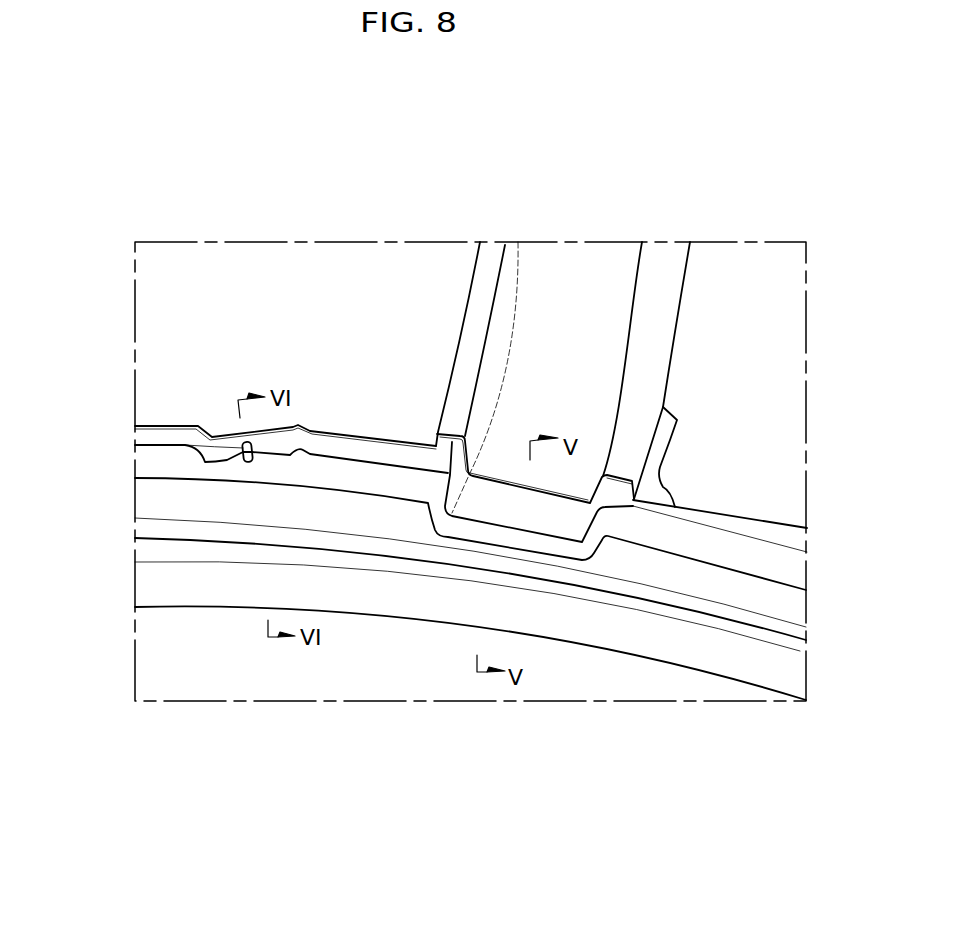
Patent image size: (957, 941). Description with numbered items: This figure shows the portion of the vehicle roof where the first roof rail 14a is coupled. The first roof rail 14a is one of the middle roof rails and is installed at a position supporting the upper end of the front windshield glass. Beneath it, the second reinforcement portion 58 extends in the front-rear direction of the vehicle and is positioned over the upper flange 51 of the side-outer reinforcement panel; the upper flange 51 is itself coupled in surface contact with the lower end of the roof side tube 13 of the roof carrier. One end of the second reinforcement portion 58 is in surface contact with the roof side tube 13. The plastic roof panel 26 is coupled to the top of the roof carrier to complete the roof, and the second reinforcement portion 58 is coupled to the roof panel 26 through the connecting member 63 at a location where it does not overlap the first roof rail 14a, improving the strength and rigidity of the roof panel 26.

The first roof rail 14a is at (596, 278).
The second reinforcement portion 58 is at (365, 480).
The roof panel 26 is at (165, 338).
The connecting member 63 is at (185, 445).
The upper flange 51 is at (398, 593).
The roof side tube 13 is at (668, 572).